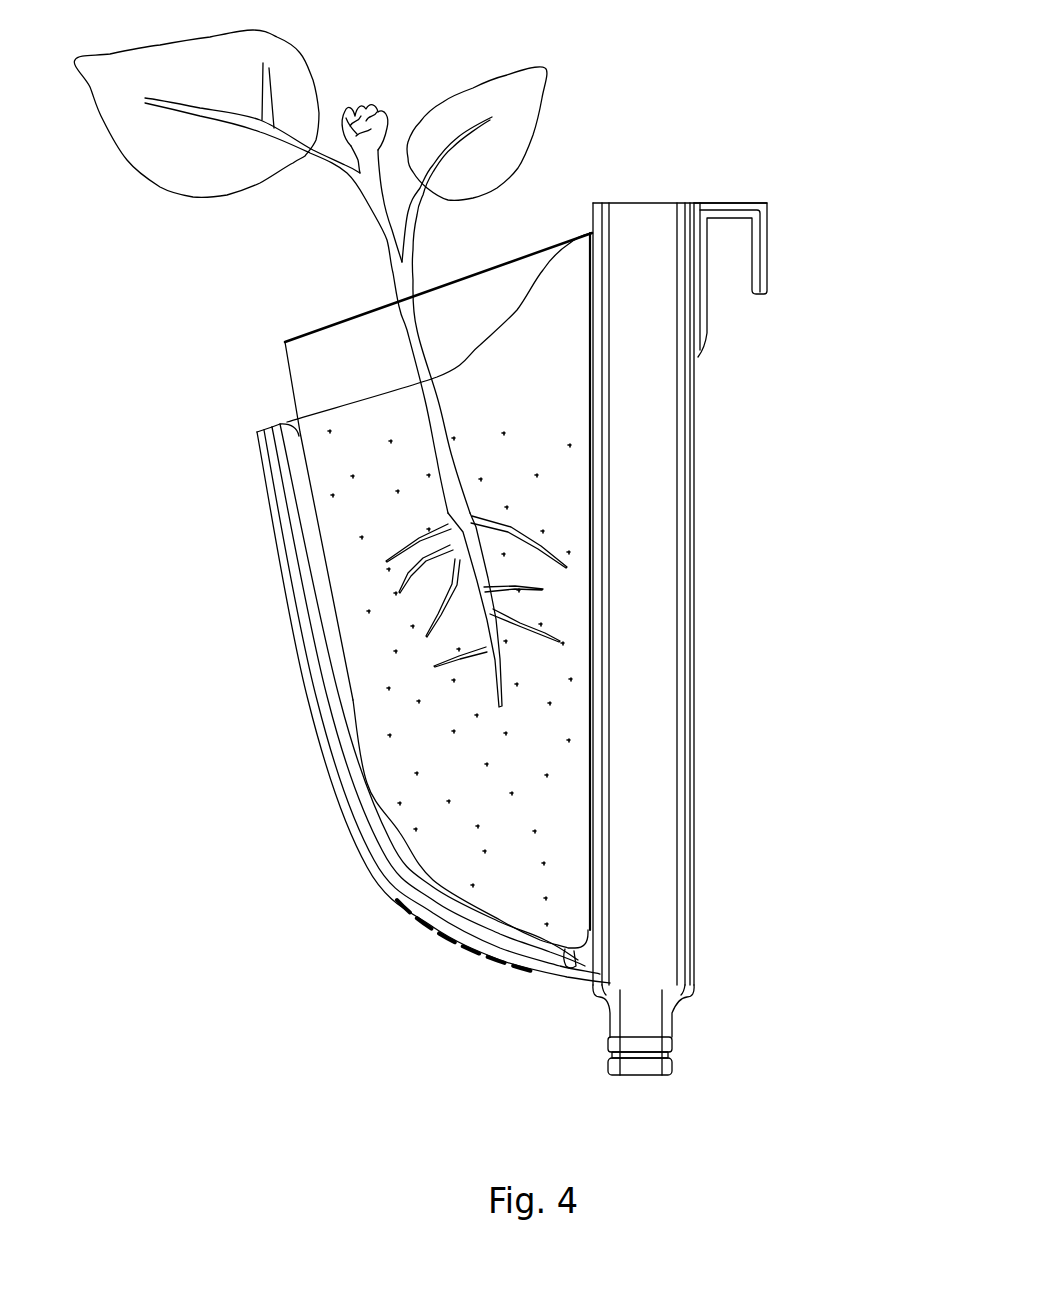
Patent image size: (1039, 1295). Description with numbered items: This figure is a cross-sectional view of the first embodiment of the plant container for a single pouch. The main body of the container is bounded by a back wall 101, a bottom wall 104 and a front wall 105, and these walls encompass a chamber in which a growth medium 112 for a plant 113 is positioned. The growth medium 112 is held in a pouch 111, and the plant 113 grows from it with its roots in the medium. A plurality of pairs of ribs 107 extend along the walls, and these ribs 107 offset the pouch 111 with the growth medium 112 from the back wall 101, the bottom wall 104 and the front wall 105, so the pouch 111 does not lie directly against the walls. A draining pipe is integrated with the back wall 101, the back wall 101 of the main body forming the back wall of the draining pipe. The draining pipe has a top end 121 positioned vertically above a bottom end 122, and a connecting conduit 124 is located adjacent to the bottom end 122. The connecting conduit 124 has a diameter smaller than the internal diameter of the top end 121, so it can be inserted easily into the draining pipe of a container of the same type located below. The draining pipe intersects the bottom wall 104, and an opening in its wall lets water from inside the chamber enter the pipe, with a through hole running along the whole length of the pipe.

The back wall 101 is at (695, 458).
The bottom wall 104 is at (490, 958).
The front wall 105 is at (305, 683).
The ribs 107 is at (303, 525).
The pouch 111 is at (590, 765).
The growth medium 112 is at (542, 697).
The plant 113 is at (493, 658).
The top end 121 is at (637, 198).
The bottom end 122 is at (635, 987).
The connecting conduit 124 is at (638, 1045).